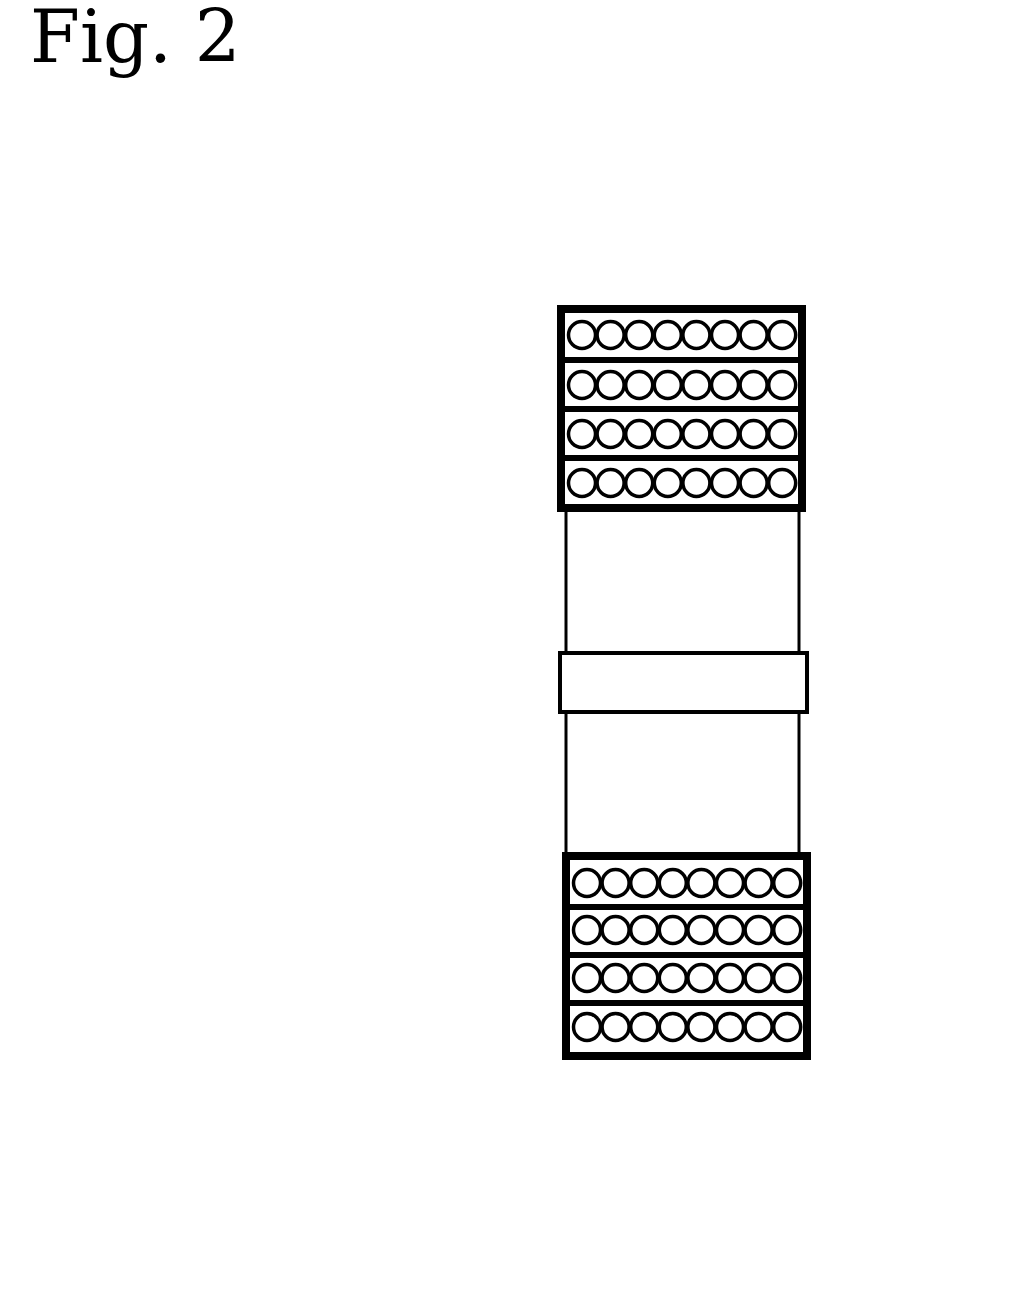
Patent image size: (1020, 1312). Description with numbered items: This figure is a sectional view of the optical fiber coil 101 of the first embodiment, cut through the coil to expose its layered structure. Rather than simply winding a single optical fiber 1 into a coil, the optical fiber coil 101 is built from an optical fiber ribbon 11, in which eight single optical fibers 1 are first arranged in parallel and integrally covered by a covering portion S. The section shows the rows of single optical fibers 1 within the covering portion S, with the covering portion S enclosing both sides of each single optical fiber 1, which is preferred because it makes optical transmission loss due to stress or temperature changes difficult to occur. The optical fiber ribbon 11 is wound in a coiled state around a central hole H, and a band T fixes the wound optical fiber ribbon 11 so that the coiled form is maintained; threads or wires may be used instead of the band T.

The single optical fiber 1 is at (724, 335).
The optical fiber ribbon 11 is at (602, 305).
The covering portion S is at (805, 345).
The band T is at (800, 686).
The central hole H is at (583, 818).
The optical fiber coil 101 is at (768, 1120).